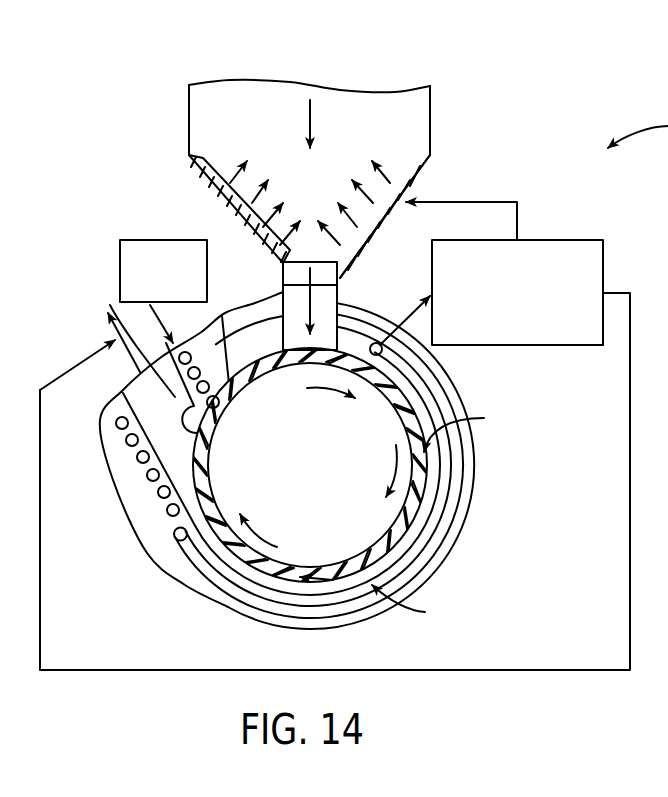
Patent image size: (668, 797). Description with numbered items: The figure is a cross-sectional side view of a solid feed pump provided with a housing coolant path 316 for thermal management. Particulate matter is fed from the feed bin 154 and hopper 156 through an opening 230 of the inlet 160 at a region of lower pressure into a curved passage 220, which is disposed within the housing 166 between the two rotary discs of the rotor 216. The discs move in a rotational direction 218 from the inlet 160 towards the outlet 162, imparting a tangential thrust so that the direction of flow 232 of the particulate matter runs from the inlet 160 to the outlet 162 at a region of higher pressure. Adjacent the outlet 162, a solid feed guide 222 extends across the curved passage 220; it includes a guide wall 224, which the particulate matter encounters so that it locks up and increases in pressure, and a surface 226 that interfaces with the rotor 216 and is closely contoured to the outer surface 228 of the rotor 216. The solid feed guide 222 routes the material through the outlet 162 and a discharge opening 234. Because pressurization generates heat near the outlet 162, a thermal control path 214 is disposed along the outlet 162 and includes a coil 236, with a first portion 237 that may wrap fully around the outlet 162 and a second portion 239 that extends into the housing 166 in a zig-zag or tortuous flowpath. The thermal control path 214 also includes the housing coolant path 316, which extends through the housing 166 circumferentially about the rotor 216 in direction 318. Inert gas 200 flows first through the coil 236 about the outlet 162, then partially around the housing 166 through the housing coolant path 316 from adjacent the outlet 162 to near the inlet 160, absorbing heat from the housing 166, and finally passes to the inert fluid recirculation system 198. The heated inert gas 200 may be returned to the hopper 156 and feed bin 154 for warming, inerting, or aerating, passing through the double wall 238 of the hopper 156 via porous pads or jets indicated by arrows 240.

The feed bin 154 is at (432, 88).
The arrows 240 is at (228, 182).
The double wall 238 is at (193, 182).
The hopper 156 is at (422, 208).
The inert fluid recirculation system 198 is at (582, 237).
The inert gas 200 is at (118, 280).
The opening 230 is at (343, 300).
The solid feed guide 222 is at (238, 373).
The guide wall 224 is at (210, 448).
The surface 226 is at (226, 416).
The rotational direction 218 is at (262, 530).
The outer surface 228 is at (413, 530).
The curved passage 220 is at (474, 427).
The housing 166 is at (472, 473).
The inlet 160 is at (343, 306).
The housing coolant path 316 is at (228, 600).
The direction 318 is at (412, 592).
The rotor 216 is at (416, 605).
The direction of flow 232 is at (329, 583).
The outlet 162 is at (121, 339).
The discharge opening 234 is at (118, 348).
The coil 236 is at (237, 308).
The thermal control path 214 is at (128, 449).
The first portion 237 is at (108, 428).
The second portion 239 is at (166, 515).